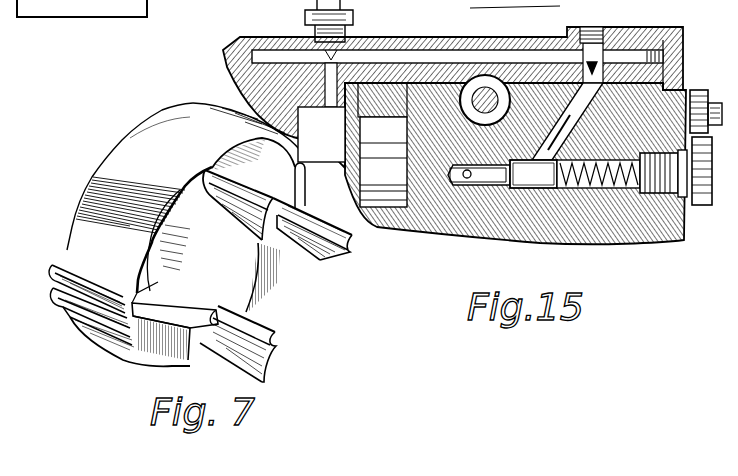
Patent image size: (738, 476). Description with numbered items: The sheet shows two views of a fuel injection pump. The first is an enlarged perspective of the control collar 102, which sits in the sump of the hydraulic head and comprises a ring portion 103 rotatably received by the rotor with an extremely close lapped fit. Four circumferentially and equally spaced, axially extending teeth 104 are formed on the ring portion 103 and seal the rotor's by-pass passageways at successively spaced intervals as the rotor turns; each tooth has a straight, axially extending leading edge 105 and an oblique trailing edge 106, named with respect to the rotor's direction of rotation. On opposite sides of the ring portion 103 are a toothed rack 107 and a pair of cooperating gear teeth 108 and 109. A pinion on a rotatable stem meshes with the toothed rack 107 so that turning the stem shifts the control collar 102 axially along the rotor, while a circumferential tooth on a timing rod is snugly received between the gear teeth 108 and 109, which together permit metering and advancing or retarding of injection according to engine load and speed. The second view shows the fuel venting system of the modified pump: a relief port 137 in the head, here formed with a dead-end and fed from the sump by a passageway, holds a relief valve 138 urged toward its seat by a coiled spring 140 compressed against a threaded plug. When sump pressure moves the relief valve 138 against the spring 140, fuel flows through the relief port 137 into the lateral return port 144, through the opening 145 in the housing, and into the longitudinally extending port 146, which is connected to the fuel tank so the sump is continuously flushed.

In FIG. 7, the control collar 102 is at (88, 174).
In FIG. 7, the ring portion 103 is at (158, 126).
In FIG. 7, the axially extending teeth 104 is at (320, 255).
In FIG. 7, the leading edge 105 is at (218, 218).
In FIG. 7, the trailing edge 106 is at (200, 292).
In FIG. 7, the toothed rack 107 is at (311, 190).
In FIG. 7, the gear tooth 108 is at (50, 272).
In FIG. 7, the gear tooth 109 is at (55, 303).
In FIG. 15, the relief port 137 is at (470, 176).
In FIG. 15, the relief valve 138 is at (514, 172).
In FIG. 15, the coiled spring 140 is at (637, 188).
In FIG. 15, the return port 144 is at (597, 57).
In FIG. 15, the opening 145 is at (588, 60).
In FIG. 15, the longitudinally extending port 146 is at (440, 57).